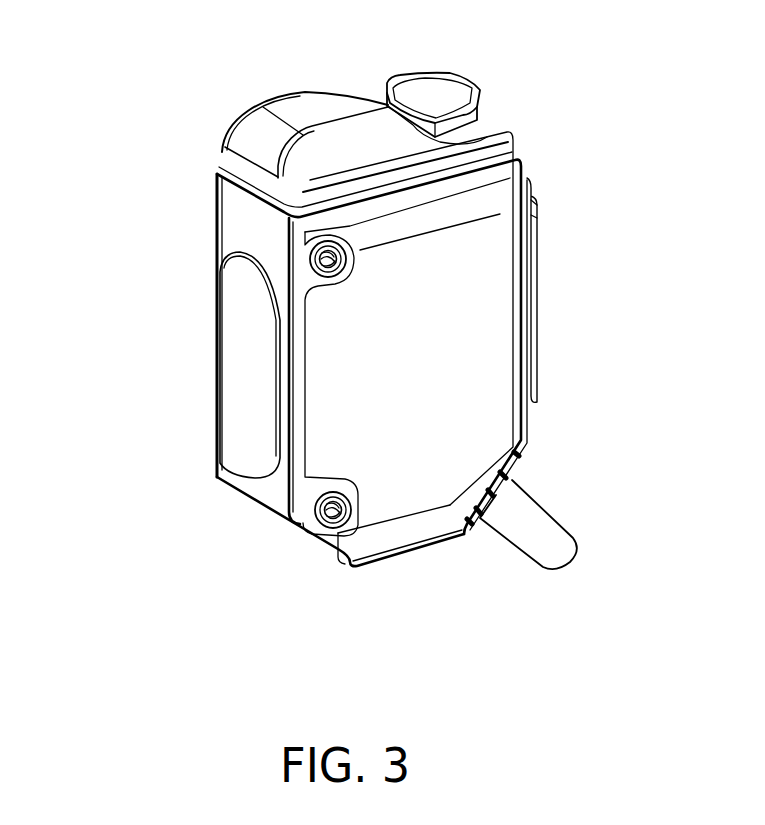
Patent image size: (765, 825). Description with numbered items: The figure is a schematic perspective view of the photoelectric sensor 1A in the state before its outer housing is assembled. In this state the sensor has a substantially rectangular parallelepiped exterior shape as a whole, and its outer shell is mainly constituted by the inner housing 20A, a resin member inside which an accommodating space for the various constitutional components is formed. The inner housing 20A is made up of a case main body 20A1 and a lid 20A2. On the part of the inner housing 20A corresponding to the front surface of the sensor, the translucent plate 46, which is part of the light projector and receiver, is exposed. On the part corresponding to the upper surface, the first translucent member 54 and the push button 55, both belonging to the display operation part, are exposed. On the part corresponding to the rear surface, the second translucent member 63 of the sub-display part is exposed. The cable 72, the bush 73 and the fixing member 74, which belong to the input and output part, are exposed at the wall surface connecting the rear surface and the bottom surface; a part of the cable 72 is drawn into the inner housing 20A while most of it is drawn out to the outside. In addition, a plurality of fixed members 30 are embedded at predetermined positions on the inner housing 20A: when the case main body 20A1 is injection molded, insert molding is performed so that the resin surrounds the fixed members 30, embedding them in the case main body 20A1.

The photoelectric sensor 1A is at (603, 21).
The inner housing 20A is at (101, 405).
The case main body 20A1 is at (225, 461).
The lid 20A2 is at (345, 407).
The fixed members 30 is at (328, 250).
The translucent plate 46 is at (240, 316).
The first translucent member 54 is at (293, 110).
The push button 55 is at (431, 85).
The second translucent member 63 is at (538, 317).
The cable 72 is at (540, 527).
The bush 73 is at (503, 495).
The fixing member 74 is at (473, 517).